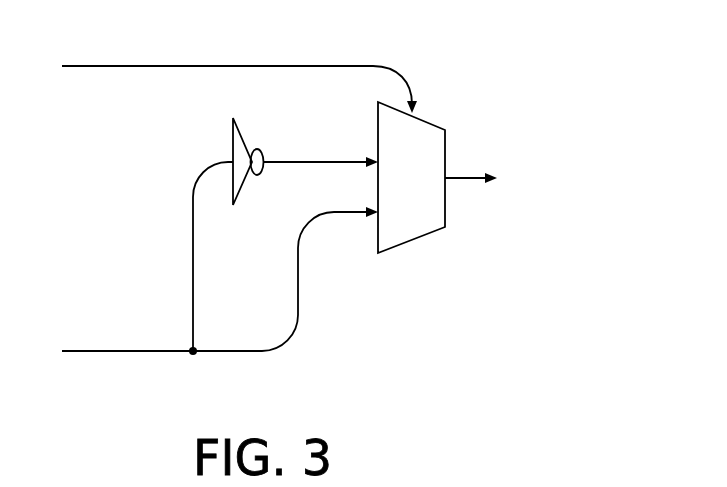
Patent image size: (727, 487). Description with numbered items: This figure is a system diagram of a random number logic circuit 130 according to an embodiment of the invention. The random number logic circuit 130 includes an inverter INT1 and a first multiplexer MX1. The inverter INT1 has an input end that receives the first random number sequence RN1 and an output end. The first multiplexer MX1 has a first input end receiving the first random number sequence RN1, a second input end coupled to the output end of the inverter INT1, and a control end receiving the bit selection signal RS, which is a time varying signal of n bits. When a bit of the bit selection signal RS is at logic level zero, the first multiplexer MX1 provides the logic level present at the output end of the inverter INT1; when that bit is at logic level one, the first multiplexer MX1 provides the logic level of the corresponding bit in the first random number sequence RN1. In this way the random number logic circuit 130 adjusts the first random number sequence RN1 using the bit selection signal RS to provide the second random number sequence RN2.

The random number logic circuit 130 is at (342, 211).
The first multiplexer MX1 is at (419, 237).
The inverter INT1 is at (243, 143).